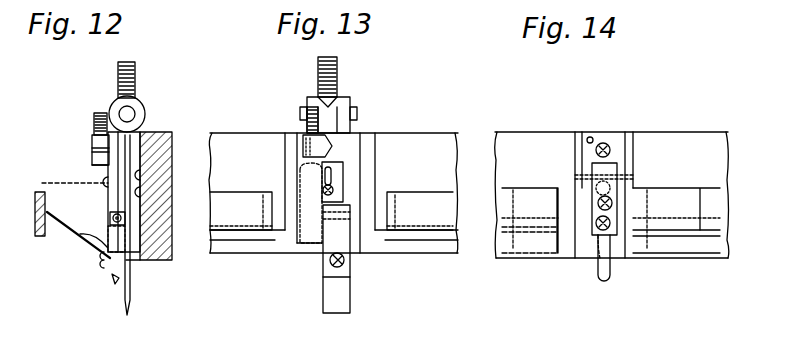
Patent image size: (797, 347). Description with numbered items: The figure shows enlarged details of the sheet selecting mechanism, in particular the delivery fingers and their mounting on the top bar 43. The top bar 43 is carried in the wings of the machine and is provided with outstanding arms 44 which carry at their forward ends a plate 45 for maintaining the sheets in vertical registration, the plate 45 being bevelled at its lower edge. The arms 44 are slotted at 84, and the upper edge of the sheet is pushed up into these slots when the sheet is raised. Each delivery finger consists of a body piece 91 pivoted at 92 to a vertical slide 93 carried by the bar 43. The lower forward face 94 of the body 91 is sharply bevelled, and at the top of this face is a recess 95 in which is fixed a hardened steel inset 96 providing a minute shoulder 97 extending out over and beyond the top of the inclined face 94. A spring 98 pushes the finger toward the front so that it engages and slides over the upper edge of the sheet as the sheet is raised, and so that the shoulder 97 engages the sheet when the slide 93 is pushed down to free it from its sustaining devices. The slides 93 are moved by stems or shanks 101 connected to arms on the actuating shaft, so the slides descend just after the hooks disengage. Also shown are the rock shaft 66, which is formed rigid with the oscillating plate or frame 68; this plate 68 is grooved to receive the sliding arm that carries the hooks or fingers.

In FIG. 12, the top bar 43 is at (166, 138).
In FIG. 13, the top bar 43 is at (245, 148).
In FIG. 14, the top bar 43 is at (520, 148).
In FIG. 12, the outstanding arms 44 is at (68, 228).
In FIG. 13, the outstanding arms 44 is at (272, 245).
In FIG. 14, the outstanding arms 44 is at (555, 244).
In FIG. 12, the plate 45 is at (36, 206).
In FIG. 13, the plate 45 is at (246, 222).
In FIG. 14, the plate 45 is at (545, 208).
In FIG. 14, the rock shaft 66 is at (612, 211).
In FIG. 14, the oscillating plate 68 is at (605, 265).
In FIG. 14, the slots 84 is at (615, 240).
In FIG. 12, the body piece 91 is at (131, 268).
In FIG. 13, the body piece 91 is at (309, 203).
In FIG. 12, the pivot 92 is at (121, 220).
In FIG. 13, the pivot 92 is at (348, 214).
In FIG. 12, the vertical slide 93 is at (116, 168).
In FIG. 13, the vertical slide 93 is at (345, 140).
In FIG. 12, the lower forward face 94 is at (121, 306).
In FIG. 13, the lower forward face 94 is at (343, 298).
In FIG. 12, the recess 95 is at (115, 280).
In FIG. 12, the hardened steel inset 96 is at (104, 266).
In FIG. 13, the hardened steel inset 96 is at (345, 268).
In FIG. 12, the shoulder 97 is at (106, 274).
In FIG. 12, the spring 98 is at (142, 263).
In FIG. 12, the stems 101 is at (135, 74).
In FIG. 13, the stems 101 is at (318, 78).